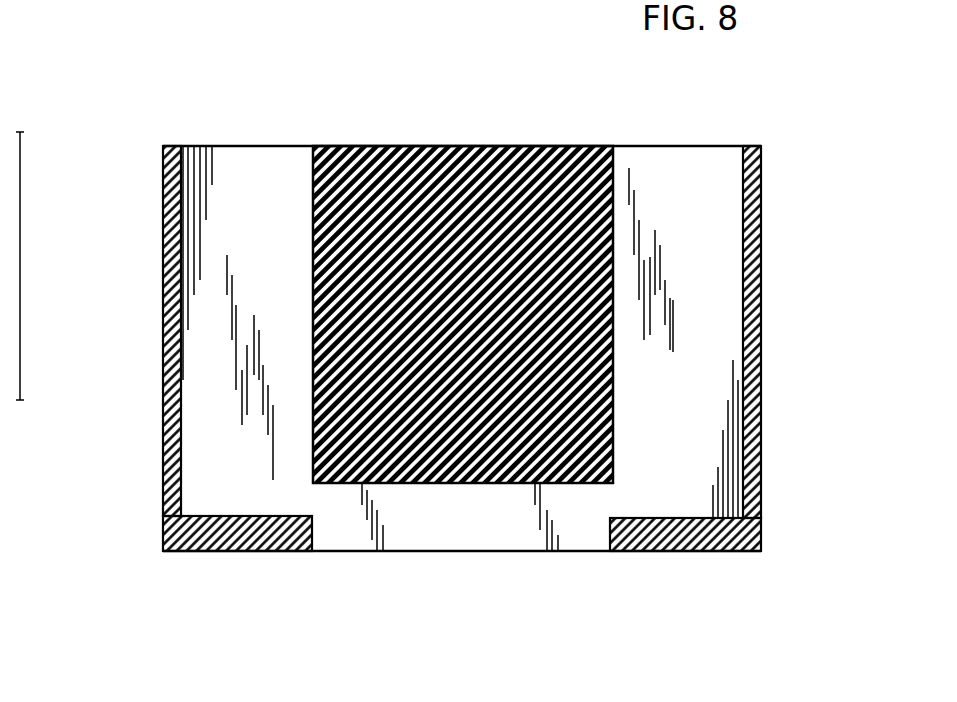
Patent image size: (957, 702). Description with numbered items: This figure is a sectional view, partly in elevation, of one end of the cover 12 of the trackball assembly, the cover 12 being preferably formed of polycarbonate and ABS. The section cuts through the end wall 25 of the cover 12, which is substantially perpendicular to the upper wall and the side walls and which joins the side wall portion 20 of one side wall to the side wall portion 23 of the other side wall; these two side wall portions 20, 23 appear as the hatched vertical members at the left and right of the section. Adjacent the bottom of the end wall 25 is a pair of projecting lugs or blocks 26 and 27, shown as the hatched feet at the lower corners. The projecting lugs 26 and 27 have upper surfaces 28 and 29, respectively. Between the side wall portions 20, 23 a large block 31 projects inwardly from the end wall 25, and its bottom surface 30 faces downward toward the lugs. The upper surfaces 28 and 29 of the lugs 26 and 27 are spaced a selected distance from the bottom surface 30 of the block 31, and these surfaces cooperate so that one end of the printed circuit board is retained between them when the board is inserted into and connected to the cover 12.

The cover 12 is at (772, 190).
The side wall portion 20 is at (762, 265).
The side wall portion 23 is at (163, 288).
The end wall 25 is at (674, 170).
The projecting lug 26 is at (260, 551).
The projecting lug 27 is at (662, 553).
The upper surface 28 is at (238, 515).
The upper surface 29 is at (698, 518).
The bottom surface 30 is at (415, 483).
The inwardly projecting block 31 is at (470, 147).